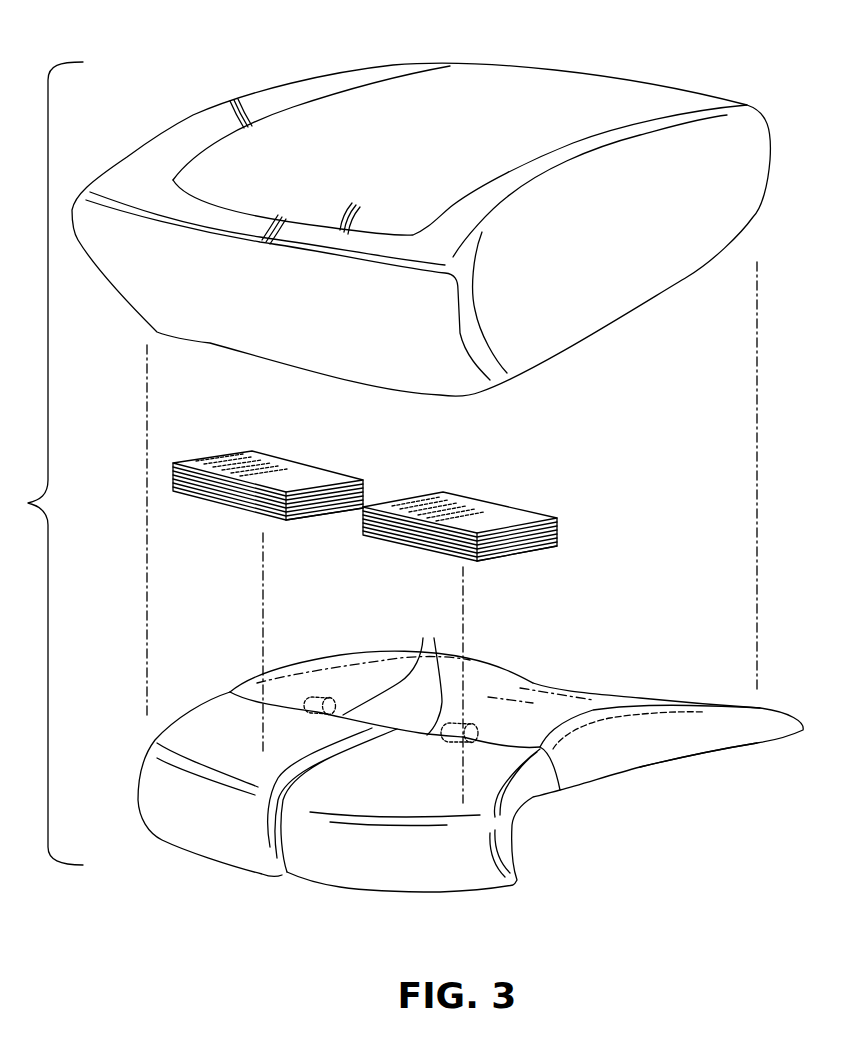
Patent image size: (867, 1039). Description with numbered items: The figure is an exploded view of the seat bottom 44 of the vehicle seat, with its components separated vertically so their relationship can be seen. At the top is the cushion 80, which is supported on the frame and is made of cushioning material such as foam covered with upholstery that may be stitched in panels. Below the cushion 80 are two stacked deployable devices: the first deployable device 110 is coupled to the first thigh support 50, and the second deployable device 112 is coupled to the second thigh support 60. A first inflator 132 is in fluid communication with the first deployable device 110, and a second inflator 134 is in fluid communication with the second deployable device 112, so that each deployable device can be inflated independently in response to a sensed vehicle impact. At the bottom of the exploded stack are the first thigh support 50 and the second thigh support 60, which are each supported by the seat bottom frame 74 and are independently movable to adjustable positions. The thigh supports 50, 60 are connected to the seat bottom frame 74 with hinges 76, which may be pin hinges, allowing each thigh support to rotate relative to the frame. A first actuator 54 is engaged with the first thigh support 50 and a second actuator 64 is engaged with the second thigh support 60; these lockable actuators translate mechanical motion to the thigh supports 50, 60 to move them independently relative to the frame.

The seat bottom 44 is at (42, 463).
The cushion 80 is at (195, 113).
The first deployable device 110 is at (310, 463).
The second deployable device 112 is at (500, 500).
The first inflator 132 is at (307, 522).
The second inflator 134 is at (500, 562).
The first thigh support 50 is at (185, 848).
The second thigh support 60 is at (340, 887).
The seat bottom frame 74 is at (723, 753).
The hinge 76 is at (392, 674).
The first actuator 54 is at (322, 694).
The second actuator 64 is at (475, 723).